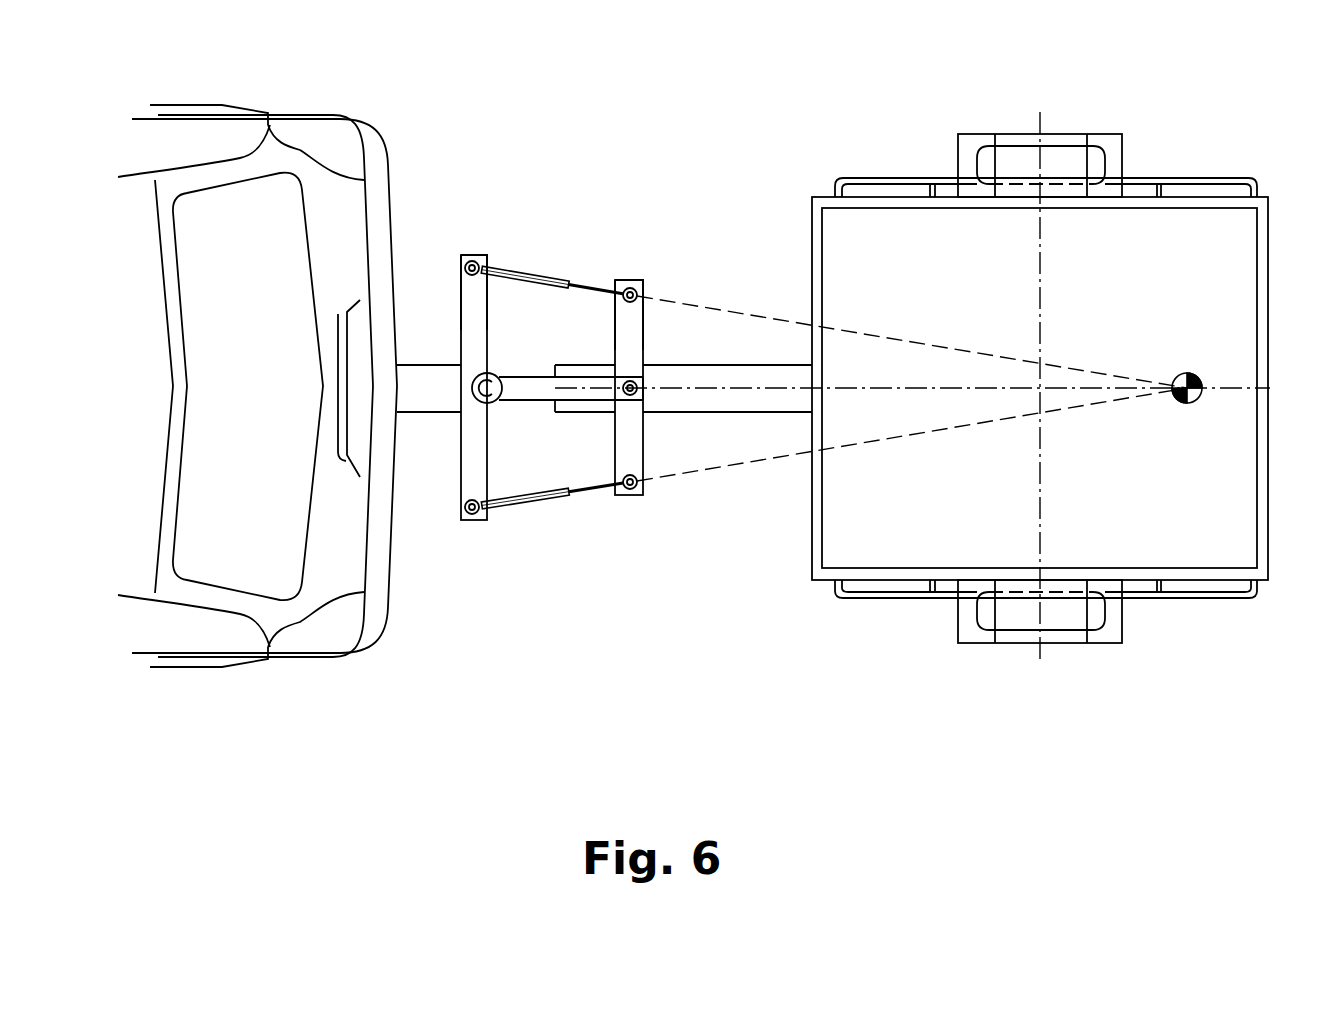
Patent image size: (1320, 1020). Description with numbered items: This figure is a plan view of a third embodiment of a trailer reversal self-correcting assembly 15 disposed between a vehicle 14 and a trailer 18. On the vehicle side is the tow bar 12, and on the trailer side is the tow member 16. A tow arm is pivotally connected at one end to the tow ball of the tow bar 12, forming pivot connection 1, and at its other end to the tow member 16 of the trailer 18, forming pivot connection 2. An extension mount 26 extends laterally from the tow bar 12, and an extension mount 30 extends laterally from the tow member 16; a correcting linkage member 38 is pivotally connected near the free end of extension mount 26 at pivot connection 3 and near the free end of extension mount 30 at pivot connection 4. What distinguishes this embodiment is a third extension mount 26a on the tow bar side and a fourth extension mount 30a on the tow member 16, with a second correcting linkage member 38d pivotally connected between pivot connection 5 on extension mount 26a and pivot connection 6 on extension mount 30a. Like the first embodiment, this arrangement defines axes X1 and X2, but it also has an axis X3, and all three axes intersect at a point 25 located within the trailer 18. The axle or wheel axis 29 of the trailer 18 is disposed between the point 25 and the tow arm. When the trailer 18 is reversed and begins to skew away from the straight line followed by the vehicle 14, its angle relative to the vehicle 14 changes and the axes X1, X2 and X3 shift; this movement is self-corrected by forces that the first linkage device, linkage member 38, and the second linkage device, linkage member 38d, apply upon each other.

The pivot connection 1 is at (497, 372).
The pivot connection 2 is at (612, 386).
The pivot connection 3 is at (472, 515).
The pivot connection 4 is at (633, 492).
The pivot connection 5 is at (470, 258).
The pivot connection 6 is at (642, 288).
The tow bar 12 is at (420, 390).
The vehicle 14 is at (363, 632).
The assembly 15 is at (562, 125).
The tow member 16 is at (702, 405).
The trailer 18 is at (818, 575).
The point 25 is at (1192, 373).
The extension mount 26 is at (458, 490).
The third extension mount 26a is at (470, 288).
The axle axis 29 is at (1040, 225).
The extension mount 30 is at (634, 432).
The fourth extension mount 30a is at (640, 347).
The correcting linkage member 38 is at (530, 498).
The correcting linkage member 38d is at (537, 278).
The axis X1 is at (757, 382).
The axis X2 is at (747, 462).
The axis X3 is at (727, 300).